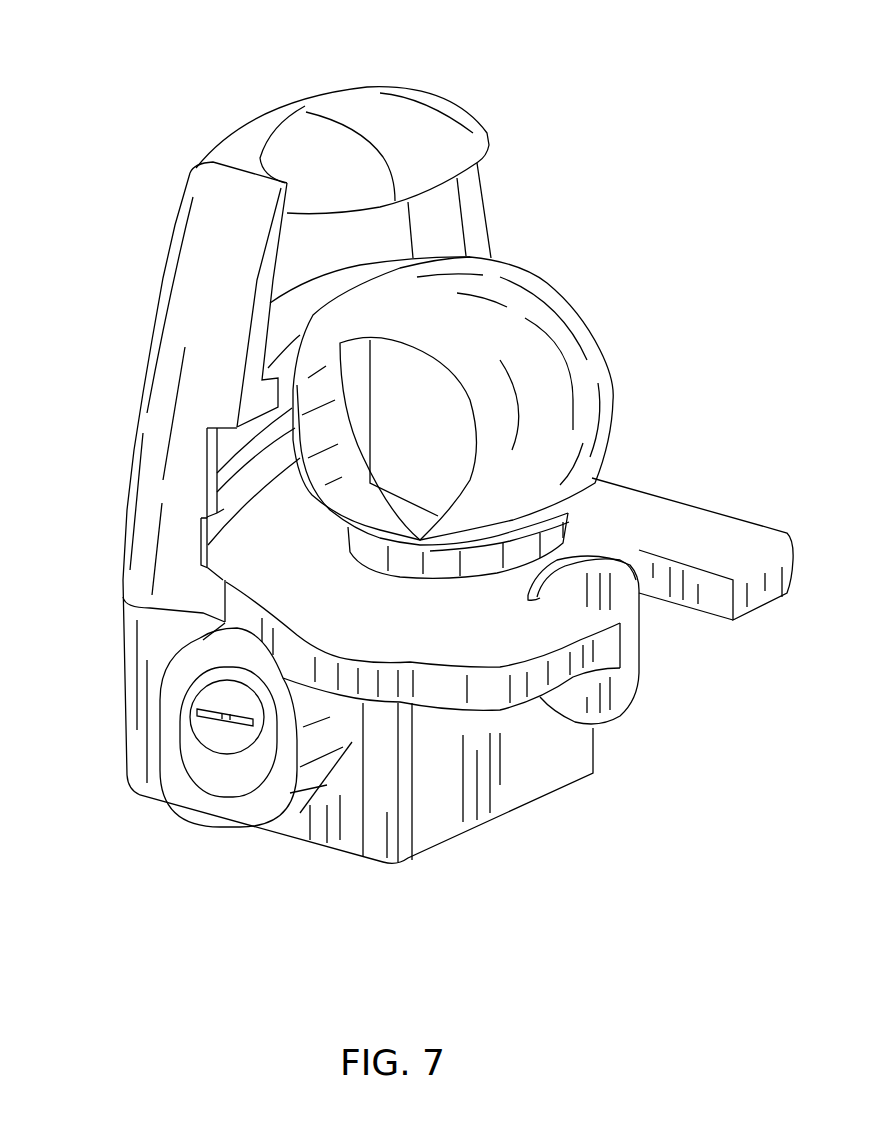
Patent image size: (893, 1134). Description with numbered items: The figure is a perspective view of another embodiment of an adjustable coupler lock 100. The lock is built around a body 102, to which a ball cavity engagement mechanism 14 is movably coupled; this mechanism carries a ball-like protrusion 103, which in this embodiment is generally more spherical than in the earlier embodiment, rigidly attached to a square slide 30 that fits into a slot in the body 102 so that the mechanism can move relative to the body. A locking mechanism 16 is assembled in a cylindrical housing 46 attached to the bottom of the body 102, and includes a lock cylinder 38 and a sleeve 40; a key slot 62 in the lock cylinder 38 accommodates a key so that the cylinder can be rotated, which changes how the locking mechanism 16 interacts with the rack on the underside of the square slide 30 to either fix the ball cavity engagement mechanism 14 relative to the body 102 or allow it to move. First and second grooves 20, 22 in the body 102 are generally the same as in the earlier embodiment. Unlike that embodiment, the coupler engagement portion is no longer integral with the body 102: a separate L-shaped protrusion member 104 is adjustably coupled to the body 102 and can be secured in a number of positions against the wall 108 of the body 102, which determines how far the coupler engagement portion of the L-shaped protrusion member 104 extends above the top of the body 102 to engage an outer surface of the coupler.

The adjustable coupler lock 100 is at (128, 97).
The body 102 is at (165, 320).
The L-shaped protrusion member 104 is at (410, 127).
The wall 108 is at (378, 237).
The ball-like protrusion 103 is at (540, 377).
The second groove 22 is at (220, 458).
The first groove 20 is at (203, 533).
The ball cavity engagement mechanism 14 is at (680, 704).
The square slide 30 is at (612, 590).
The locking mechanism 16 is at (179, 840).
The key slot 62 is at (213, 705).
The sleeve 40 is at (223, 783).
The lock cylinder 38 is at (217, 735).
The cylindrical housing 46 is at (320, 777).